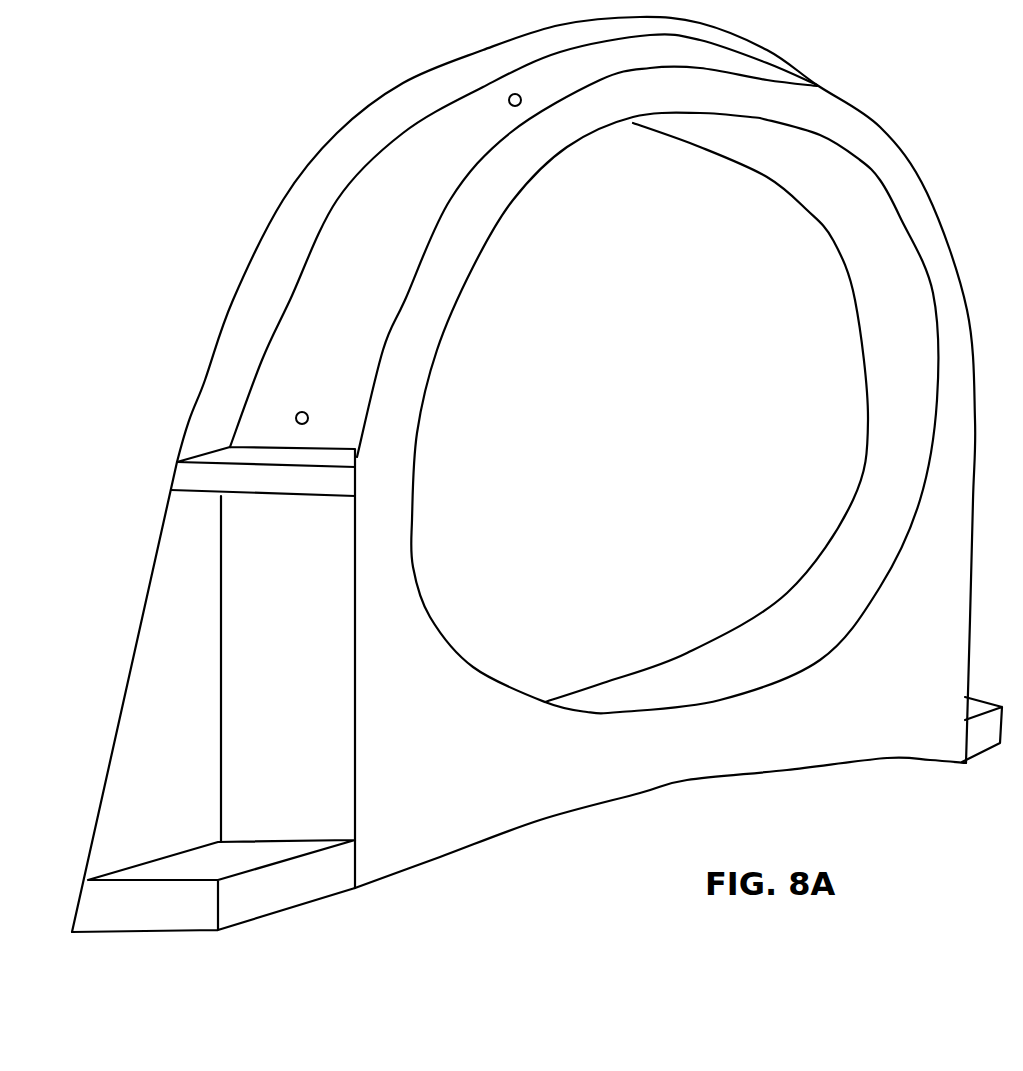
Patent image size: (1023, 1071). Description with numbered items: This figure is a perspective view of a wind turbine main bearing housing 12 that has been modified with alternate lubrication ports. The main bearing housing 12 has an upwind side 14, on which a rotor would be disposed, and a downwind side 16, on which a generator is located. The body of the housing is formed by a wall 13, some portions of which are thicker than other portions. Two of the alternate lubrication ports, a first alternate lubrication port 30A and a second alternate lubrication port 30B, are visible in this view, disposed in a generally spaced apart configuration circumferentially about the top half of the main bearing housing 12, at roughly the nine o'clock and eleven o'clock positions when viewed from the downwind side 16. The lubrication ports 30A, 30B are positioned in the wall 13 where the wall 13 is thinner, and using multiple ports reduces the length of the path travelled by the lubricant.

The main bearing housing 12 is at (860, 80).
The wall 13 is at (390, 240).
The upwind side 14 is at (770, 178).
The downwind side 16 is at (402, 440).
The alternate lubrication port 30A is at (292, 417).
The alternate lubrication port 30B is at (506, 100).